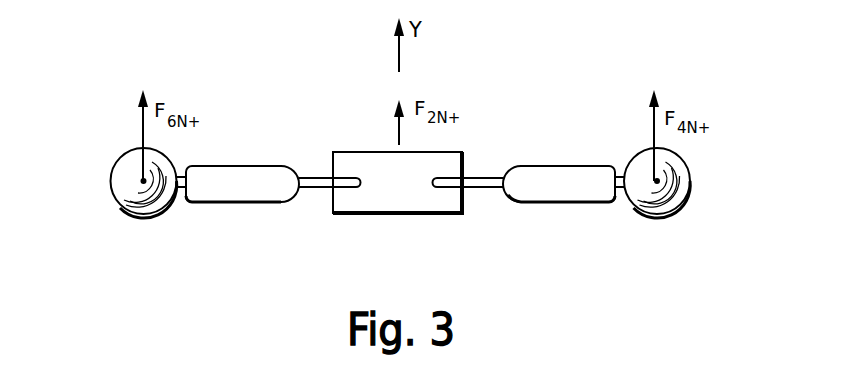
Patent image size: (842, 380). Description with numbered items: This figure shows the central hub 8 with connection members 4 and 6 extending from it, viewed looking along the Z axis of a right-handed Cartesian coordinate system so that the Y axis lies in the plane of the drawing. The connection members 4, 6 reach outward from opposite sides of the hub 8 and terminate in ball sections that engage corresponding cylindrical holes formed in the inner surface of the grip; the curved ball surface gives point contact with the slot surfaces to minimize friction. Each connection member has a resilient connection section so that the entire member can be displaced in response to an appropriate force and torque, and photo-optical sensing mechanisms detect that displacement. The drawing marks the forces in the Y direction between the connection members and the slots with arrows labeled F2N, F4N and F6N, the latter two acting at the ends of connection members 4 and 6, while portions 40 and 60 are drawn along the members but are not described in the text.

The connection member 4 is at (585, 202).
The connection member 6 is at (217, 202).
The hub 8 is at (408, 213).
The beam 40 is at (580, 166).
The beam 60 is at (258, 166).